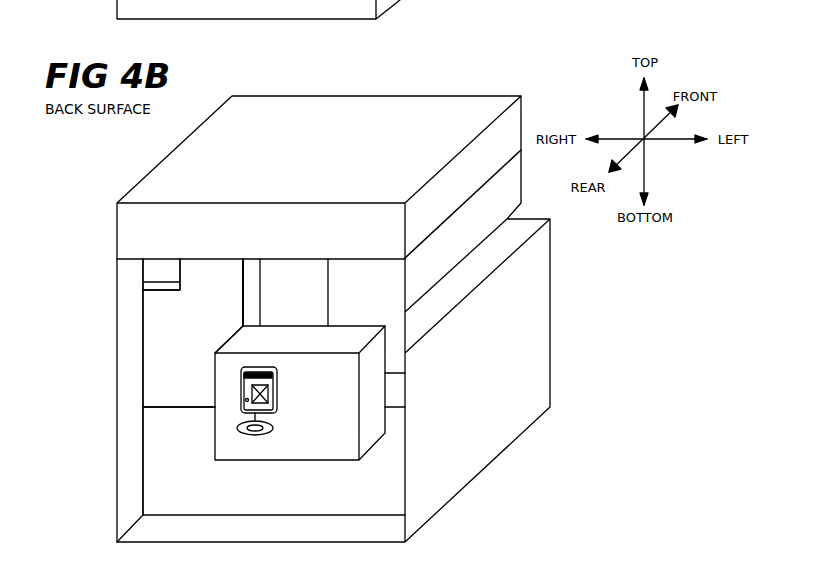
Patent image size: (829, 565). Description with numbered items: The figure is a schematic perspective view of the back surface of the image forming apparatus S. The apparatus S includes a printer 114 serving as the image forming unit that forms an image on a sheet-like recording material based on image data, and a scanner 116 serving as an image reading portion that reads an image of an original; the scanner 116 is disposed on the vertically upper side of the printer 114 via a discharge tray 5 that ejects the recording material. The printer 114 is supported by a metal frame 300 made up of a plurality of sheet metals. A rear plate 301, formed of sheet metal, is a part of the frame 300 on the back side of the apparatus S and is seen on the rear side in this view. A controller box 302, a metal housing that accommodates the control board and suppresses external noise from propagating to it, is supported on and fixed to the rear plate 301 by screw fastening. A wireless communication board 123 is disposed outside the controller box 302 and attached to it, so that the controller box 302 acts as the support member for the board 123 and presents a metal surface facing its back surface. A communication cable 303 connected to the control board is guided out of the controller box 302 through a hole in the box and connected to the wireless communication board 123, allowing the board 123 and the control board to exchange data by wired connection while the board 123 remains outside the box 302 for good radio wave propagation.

The image forming apparatus S is at (457, 96).
The scanner 116 is at (140, 230).
The printer 114 is at (512, 370).
The discharge tray 5 is at (467, 275).
The frame 300 is at (126, 387).
The rear plate 301 is at (178, 362).
The controller box 302 is at (239, 338).
The wireless communication board 123 is at (277, 388).
The communication cable 303 is at (257, 422).